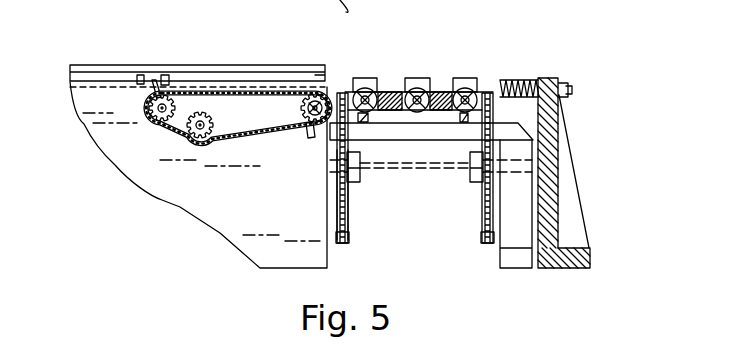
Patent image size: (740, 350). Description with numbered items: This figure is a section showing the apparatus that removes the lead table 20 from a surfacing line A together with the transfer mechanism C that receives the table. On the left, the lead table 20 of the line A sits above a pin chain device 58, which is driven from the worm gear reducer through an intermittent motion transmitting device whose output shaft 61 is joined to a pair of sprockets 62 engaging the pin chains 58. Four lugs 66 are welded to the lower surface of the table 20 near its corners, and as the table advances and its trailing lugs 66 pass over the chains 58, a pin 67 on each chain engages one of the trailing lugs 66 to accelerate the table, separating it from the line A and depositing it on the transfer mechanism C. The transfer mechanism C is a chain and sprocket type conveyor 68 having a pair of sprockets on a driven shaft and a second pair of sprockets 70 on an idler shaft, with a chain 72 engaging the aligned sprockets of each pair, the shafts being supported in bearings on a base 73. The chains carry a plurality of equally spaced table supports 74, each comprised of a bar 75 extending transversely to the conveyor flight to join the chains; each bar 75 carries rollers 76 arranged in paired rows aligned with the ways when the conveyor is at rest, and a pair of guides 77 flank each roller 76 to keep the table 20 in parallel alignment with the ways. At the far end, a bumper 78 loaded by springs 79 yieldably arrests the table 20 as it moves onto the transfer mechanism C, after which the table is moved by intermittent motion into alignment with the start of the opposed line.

The lead table 20 is at (113, 67).
The lugs 66 is at (165, 76).
The sprockets 62 is at (150, 118).
The pin chain device 58 is at (258, 135).
The output shaft 61 is at (303, 110).
The pin 67 is at (309, 128).
The chain and sprocket type conveyor 68 is at (431, 186).
The second pair of sprockets 70 is at (350, 198).
The chain 72 is at (352, 236).
The table supports 74 is at (398, 88).
The bar 75 is at (387, 92).
The rollers 76 is at (461, 92).
The guides 77 is at (470, 85).
The base 73 is at (517, 247).
The springs 79 is at (521, 80).
The bumper 78 is at (578, 133).
The surfacing line A is at (262, 65).
The transfer mechanism C is at (464, 55).